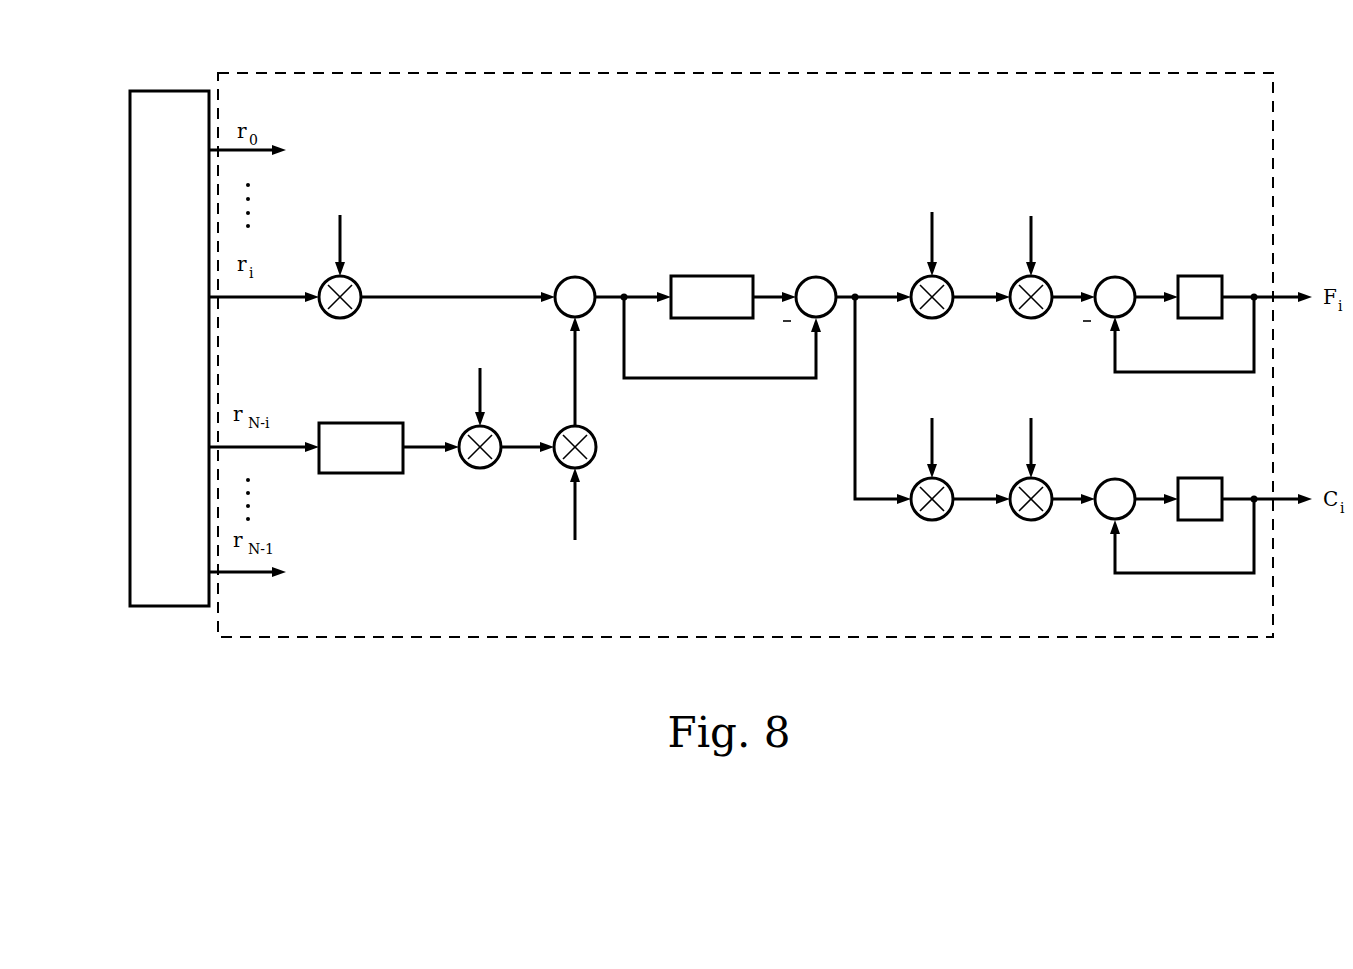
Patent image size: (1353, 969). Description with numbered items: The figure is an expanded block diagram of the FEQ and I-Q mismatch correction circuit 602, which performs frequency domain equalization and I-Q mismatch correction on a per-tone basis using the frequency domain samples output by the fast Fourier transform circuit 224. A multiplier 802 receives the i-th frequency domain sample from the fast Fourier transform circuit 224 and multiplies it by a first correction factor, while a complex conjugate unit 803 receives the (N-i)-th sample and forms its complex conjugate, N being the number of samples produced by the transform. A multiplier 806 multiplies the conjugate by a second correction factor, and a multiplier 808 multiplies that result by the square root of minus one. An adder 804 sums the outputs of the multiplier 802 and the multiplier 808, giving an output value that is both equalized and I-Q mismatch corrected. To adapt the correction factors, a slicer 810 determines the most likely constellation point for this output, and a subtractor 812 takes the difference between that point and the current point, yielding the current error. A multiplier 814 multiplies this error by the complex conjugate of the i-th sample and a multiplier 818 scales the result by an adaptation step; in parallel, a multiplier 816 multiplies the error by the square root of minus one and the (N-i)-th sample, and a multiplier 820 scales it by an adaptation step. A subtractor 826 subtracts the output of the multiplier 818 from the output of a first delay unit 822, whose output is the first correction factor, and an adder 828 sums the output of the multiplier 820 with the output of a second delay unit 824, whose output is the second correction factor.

The fast Fourier transform circuit 224 is at (160, 91).
The FEQ and I-Q mismatch correction circuit 602 is at (1178, 73).
The multiplier 802 is at (356, 283).
The complex conjugate unit 803 is at (360, 423).
The adder 804 is at (590, 283).
The multiplier 806 is at (497, 432).
The multiplier 808 is at (592, 441).
The slicer 810 is at (712, 276).
The subtractor 812 is at (832, 283).
The multiplier 814 is at (949, 283).
The multiplier 816 is at (949, 485).
The multiplier 818 is at (1048, 283).
The multiplier 820 is at (1048, 485).
The first delay unit 822 is at (1200, 276).
The second delay unit 824 is at (1200, 478).
The subtractor 826 is at (1132, 283).
The adder 828 is at (1132, 485).